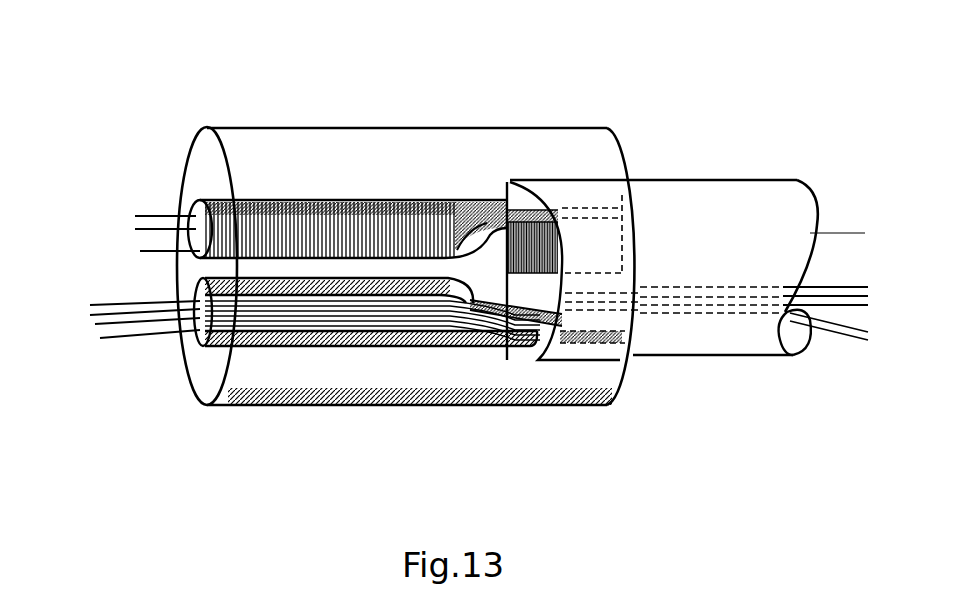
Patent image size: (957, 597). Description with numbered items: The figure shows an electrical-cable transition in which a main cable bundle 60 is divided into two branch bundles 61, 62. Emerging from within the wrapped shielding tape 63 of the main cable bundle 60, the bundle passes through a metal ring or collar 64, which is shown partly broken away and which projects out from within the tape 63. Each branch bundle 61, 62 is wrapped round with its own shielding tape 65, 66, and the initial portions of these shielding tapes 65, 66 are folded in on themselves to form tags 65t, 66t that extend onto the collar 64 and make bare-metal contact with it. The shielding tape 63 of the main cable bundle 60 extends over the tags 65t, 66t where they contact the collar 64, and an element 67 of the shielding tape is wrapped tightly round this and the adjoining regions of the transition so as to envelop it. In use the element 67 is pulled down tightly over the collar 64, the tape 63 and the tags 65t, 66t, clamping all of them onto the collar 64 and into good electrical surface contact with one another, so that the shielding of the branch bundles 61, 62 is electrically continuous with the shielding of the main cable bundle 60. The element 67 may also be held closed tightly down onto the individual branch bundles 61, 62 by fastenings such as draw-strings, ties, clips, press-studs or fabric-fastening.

The main cable bundle 60 is at (725, 172).
The branch bundle 61 is at (208, 188).
The branch bundle 62 is at (213, 354).
The shielding tape 63 is at (680, 355).
The metal ring or collar 64 is at (508, 362).
The shielding tape 65 is at (381, 200).
The tag 65t is at (605, 206).
The shielding tape 66 is at (378, 347).
The tag 66t is at (600, 343).
The element of the shielding tape 67 is at (528, 128).